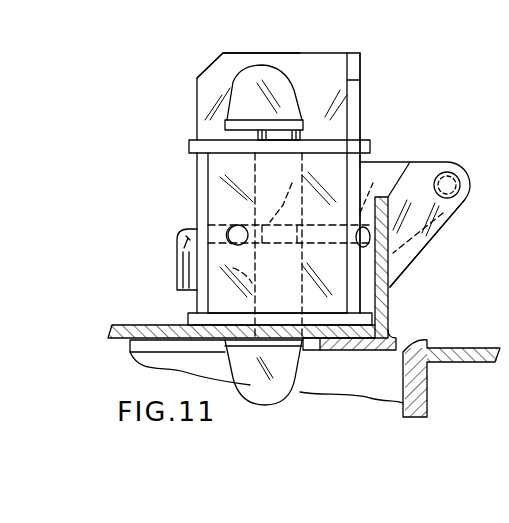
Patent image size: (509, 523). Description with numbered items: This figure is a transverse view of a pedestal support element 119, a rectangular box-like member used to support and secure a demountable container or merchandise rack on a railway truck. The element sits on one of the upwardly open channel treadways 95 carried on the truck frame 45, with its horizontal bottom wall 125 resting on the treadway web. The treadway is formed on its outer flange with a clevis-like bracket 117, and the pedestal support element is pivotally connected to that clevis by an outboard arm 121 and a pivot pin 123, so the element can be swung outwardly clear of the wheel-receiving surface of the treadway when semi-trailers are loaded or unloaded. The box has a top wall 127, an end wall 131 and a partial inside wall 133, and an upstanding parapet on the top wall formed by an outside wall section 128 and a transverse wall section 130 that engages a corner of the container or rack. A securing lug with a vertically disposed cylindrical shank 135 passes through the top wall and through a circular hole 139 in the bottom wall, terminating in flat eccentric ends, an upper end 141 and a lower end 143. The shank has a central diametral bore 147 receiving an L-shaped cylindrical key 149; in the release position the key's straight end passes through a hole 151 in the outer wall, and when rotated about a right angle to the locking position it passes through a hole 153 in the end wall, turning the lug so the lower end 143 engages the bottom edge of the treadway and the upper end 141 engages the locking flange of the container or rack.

The truck frame 45 is at (428, 383).
The treadway 95 is at (390, 300).
The clevis-like bracket 117 is at (422, 252).
The pedestal support element 119 is at (188, 106).
The outboard arm 121 is at (415, 162).
The pivot pin 123 is at (455, 173).
The bottom wall 125 is at (188, 317).
The top wall 127 is at (366, 140).
The outside wall section 128 is at (362, 90).
The transverse wall section 130 is at (233, 53).
The end wall 131 is at (250, 175).
The partial inside wall 133 is at (197, 165).
The cylindrical shank 135 is at (233, 264).
The circular hole 139 is at (343, 357).
The upper eccentric end 141 is at (294, 90).
The lower eccentric end 143 is at (297, 372).
The central diametral bore 147 is at (282, 193).
The L-shaped cylindrical key 149 is at (178, 246).
The hole in outer wall 151 is at (380, 189).
The hole in end wall 153 is at (229, 230).